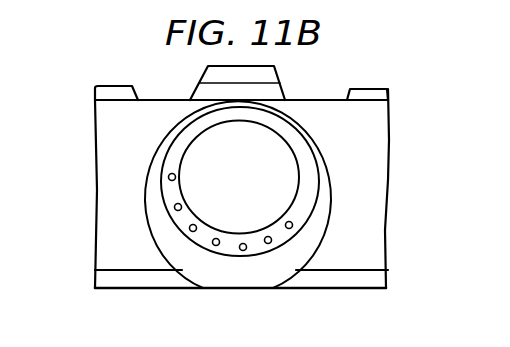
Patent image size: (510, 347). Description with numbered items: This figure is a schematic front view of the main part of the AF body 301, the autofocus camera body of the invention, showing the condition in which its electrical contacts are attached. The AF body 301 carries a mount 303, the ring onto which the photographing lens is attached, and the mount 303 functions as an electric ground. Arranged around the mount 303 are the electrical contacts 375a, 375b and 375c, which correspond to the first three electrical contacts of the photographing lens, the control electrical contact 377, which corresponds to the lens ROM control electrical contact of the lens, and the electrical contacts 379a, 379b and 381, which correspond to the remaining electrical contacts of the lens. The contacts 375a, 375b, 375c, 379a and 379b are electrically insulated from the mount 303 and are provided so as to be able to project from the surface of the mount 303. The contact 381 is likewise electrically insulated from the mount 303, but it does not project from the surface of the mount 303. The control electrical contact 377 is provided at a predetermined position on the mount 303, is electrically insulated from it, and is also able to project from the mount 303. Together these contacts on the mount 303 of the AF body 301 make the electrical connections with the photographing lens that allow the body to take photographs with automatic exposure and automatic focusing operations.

The AF body 301 is at (388, 180).
The mount 303 is at (303, 147).
The electrical contact 375a is at (168, 177).
The electrical contact 375b is at (174, 209).
The electrical contact 375c is at (191, 231).
The electrical contact 379a is at (214, 246).
The electrical contact 379b is at (244, 251).
The electrical contact 381 is at (270, 244).
The control electrical contact 377 is at (291, 228).